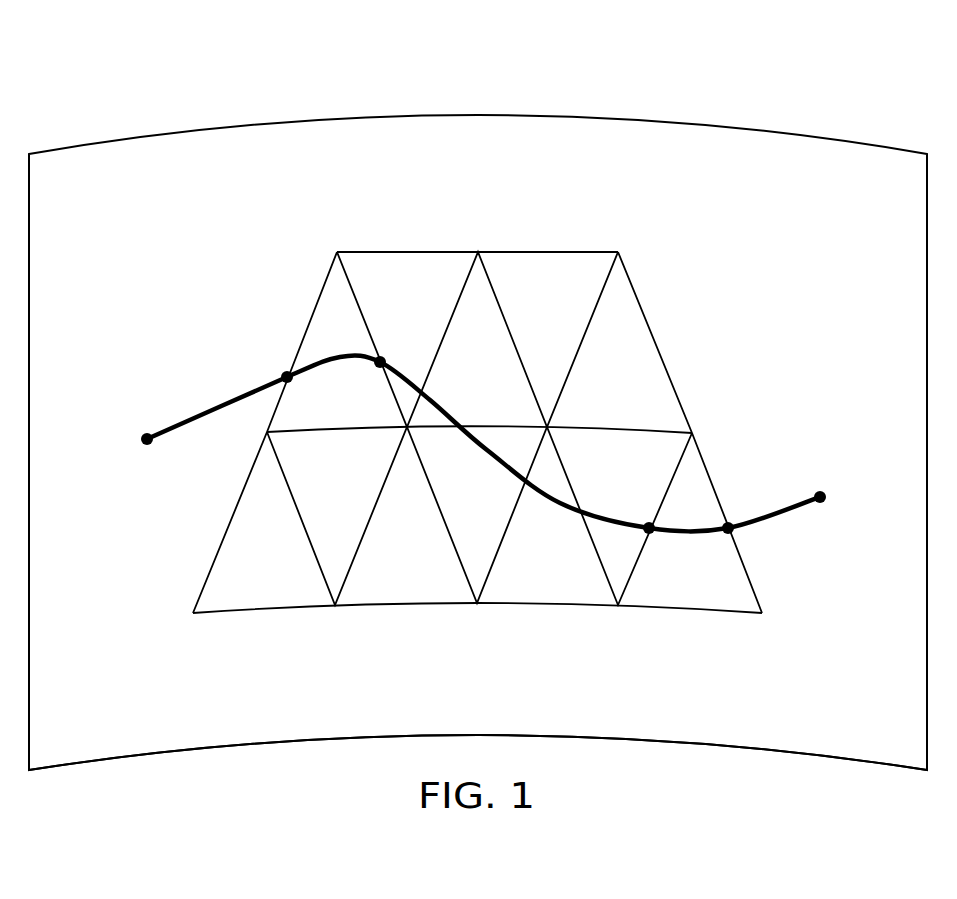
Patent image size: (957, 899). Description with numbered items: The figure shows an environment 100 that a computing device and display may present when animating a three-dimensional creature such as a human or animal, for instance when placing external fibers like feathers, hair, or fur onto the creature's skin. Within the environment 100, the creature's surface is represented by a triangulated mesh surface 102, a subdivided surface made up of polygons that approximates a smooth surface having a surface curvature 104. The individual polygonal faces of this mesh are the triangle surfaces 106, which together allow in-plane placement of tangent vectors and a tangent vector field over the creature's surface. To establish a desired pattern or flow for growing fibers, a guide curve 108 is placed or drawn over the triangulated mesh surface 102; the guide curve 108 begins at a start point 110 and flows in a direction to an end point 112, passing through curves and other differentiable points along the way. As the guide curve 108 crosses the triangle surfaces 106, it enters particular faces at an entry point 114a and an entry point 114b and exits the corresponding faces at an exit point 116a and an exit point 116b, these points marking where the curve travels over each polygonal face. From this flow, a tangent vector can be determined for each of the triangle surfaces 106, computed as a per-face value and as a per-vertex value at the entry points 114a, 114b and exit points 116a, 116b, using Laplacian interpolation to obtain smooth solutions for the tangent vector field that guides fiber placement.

The environment 100 is at (753, 69).
The triangulated mesh surface 102 is at (356, 116).
The surface curvature 104 is at (278, 741).
The triangle surfaces 106 is at (678, 311).
The guide curve 108 is at (797, 510).
The start point 110 is at (146, 431).
The end point 112 is at (824, 490).
The entry point 114a is at (284, 370).
The entry point 114b is at (643, 521).
The exit point 116a is at (384, 355).
The exit point 116b is at (734, 519).